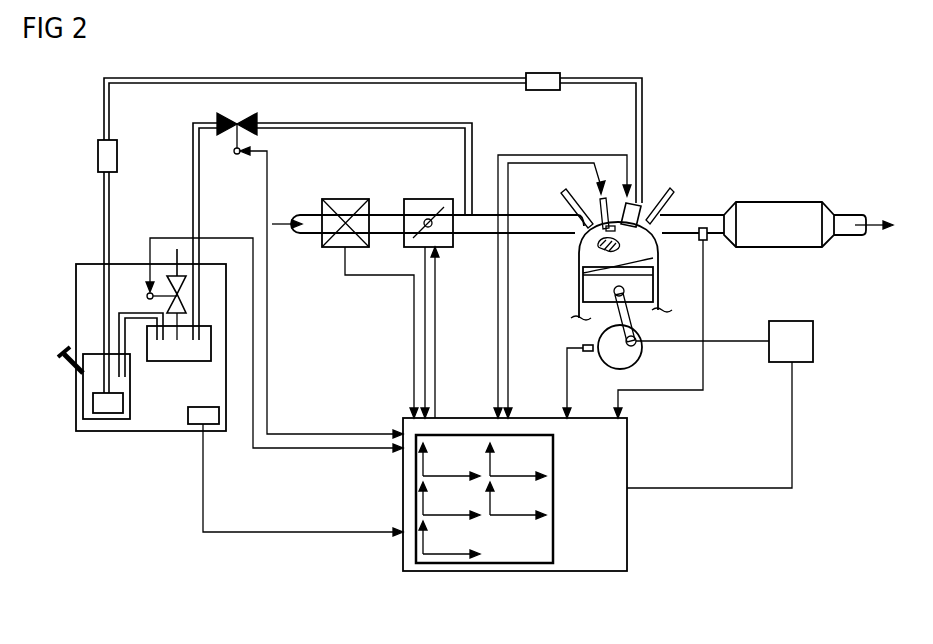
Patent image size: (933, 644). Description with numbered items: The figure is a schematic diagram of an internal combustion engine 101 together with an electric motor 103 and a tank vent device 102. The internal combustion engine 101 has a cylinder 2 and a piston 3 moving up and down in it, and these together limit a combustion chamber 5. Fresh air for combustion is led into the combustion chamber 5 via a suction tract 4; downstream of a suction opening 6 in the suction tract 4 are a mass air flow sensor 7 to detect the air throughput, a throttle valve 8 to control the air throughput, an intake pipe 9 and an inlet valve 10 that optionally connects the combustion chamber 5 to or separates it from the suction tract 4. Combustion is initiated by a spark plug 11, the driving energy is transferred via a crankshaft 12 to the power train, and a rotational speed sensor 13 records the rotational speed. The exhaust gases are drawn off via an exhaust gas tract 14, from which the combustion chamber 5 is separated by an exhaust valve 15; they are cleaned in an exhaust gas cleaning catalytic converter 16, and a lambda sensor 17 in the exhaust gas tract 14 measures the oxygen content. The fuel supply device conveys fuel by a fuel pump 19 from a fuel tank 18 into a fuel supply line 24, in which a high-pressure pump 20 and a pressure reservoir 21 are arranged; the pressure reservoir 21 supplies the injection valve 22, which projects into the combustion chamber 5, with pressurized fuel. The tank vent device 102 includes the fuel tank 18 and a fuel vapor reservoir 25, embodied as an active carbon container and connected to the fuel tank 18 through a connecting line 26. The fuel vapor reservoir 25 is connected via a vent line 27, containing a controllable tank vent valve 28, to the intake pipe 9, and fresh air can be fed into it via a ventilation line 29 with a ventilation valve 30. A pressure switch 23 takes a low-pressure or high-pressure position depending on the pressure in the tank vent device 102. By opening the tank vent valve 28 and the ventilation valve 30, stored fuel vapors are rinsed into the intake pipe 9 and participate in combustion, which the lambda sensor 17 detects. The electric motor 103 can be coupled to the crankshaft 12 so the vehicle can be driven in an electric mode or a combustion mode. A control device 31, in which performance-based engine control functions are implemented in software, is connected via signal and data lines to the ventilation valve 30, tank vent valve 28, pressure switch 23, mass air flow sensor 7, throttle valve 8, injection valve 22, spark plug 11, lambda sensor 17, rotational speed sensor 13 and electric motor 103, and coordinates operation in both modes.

The cylinder 2 is at (665, 312).
The piston 3 is at (653, 287).
The suction tract 4 is at (325, 260).
The combustion chamber 5 is at (579, 256).
The suction opening 6 is at (290, 216).
The mass air flow sensor 7 is at (345, 198).
The throttle valve 8 is at (430, 198).
The intake pipe 9 is at (497, 212).
The inlet valve 10 is at (564, 206).
The spark plug 11 is at (602, 197).
The crankshaft 12 is at (640, 348).
The rotational speed sensor 13 is at (590, 352).
The exhaust gas tract 14 is at (855, 200).
The exhaust valve 15 is at (672, 192).
The exhaust gas cleaning catalytic converter 16 is at (783, 202).
The lambda sensor 17 is at (706, 243).
The fuel tank 18 is at (133, 380).
The fuel pump 19 is at (125, 408).
The high-pressure pump 20 is at (98, 158).
The pressure reservoir 21 is at (543, 73).
The injection valve 22 is at (642, 206).
The pressure switch 23 is at (212, 424).
The fuel supply line 24 is at (432, 77).
The fuel vapor reservoir 25 is at (195, 355).
The connecting line 26 is at (132, 312).
The vent line 27 is at (388, 129).
The tank vent valve 28 is at (214, 118).
The ventilation line 29 is at (166, 262).
The ventilation valve 30 is at (180, 268).
The control device 31 is at (627, 450).
The internal combustion engine 101 is at (735, 108).
The tank vent device 102 is at (65, 268).
The electric motor 103 is at (813, 342).